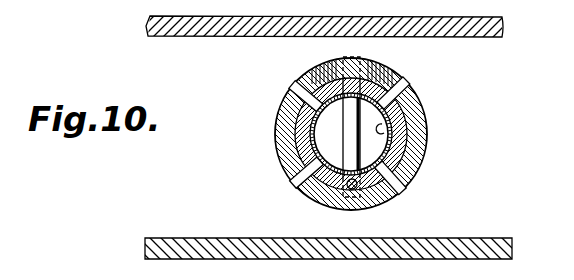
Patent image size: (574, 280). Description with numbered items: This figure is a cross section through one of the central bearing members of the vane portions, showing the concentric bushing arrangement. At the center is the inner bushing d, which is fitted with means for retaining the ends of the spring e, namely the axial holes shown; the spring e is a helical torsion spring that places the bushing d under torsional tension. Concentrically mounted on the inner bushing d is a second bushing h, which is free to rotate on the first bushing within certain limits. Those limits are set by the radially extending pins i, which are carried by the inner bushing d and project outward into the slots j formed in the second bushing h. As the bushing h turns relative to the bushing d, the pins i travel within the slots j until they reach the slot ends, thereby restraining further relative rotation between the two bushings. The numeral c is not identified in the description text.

The second bushing h is at (427, 117).
The inner bushing d is at (412, 156).
The bushing c is at (386, 137).
The radially extending pins i is at (295, 84).
The slots j is at (372, 66).
The spring e is at (363, 188).